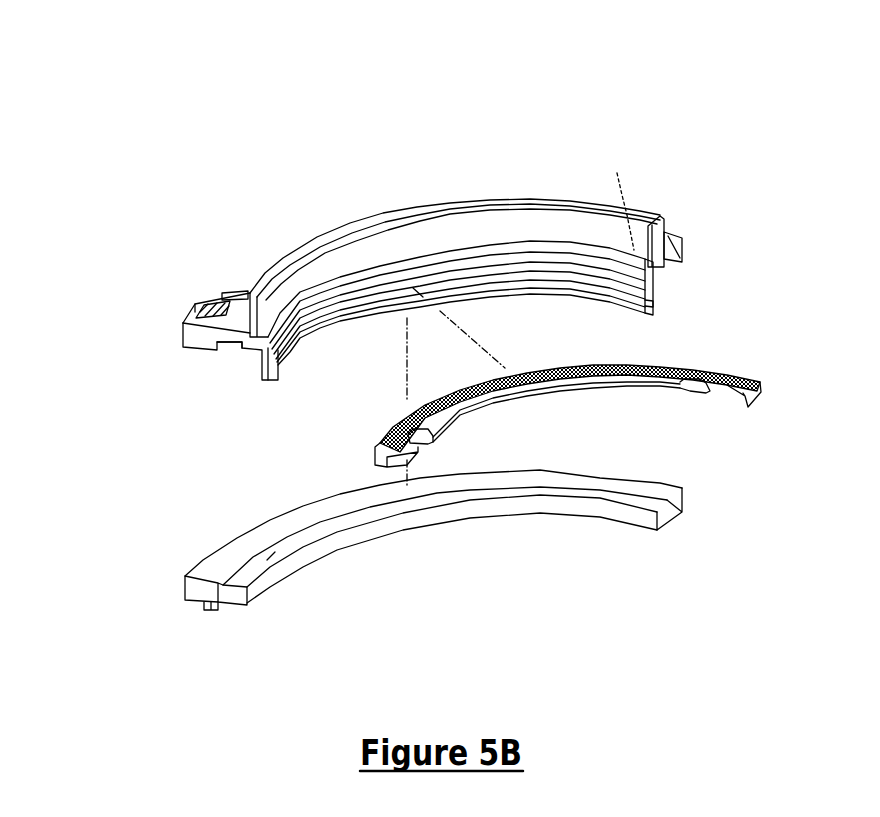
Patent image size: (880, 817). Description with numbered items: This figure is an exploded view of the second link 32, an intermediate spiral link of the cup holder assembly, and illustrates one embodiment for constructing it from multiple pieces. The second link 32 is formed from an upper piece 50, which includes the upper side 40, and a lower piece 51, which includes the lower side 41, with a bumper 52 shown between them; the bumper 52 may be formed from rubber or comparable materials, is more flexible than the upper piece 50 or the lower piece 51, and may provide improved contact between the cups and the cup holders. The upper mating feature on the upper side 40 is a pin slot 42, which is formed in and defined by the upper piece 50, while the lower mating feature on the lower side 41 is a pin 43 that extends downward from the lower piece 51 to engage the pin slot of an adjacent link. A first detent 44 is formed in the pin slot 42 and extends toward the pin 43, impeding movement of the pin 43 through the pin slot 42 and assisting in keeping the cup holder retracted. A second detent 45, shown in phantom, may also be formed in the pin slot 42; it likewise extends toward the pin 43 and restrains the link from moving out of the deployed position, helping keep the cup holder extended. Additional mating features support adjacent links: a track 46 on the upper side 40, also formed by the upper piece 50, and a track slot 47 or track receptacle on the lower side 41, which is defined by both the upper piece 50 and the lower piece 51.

The second link 32 is at (471, 122).
The upper side 40 is at (668, 232).
The lower side 41 is at (670, 517).
The pin slot 42 is at (210, 300).
The pin 43 is at (212, 610).
The first detent 44 is at (222, 293).
The second detent 45 is at (617, 197).
The track 46 is at (423, 227).
The track slot 47 is at (237, 350).
The upper piece 50 is at (195, 337).
The lower piece 51 is at (203, 590).
The bumper 52 is at (553, 384).